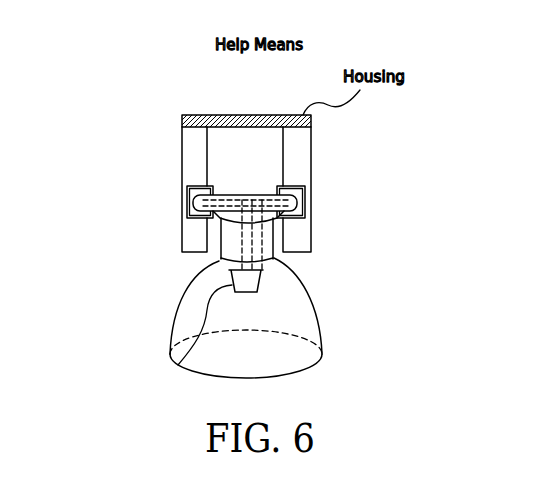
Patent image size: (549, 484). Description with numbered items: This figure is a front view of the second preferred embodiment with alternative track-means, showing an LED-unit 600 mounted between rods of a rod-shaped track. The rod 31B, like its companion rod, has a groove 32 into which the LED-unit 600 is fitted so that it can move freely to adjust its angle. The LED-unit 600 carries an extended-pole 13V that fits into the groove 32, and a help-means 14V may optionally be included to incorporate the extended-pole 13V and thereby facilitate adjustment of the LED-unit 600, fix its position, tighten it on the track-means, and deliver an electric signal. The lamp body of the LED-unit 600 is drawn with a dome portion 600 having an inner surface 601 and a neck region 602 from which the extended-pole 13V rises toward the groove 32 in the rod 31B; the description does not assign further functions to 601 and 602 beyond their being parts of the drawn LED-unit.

The help-means 14V is at (280, 192).
The rod 31B is at (193, 160).
The groove 32 is at (195, 202).
The extended-pole 13V is at (193, 205).
The lamp socket conductors 602 is at (260, 250).
The LED-unit 600 is at (322, 338).
The inner surface of bulb 601 is at (178, 365).